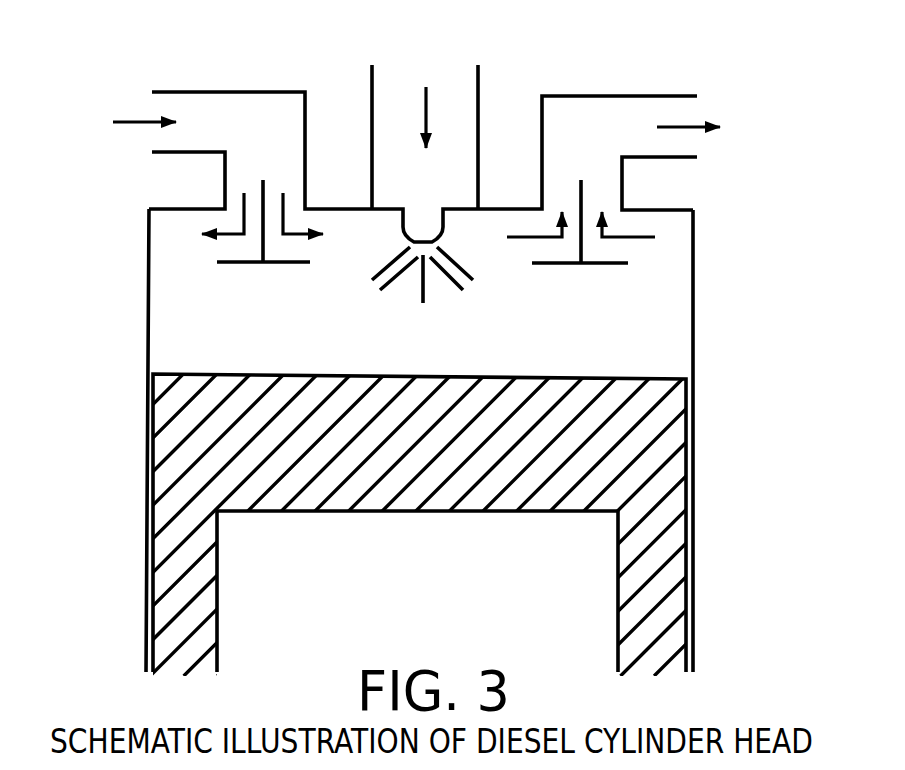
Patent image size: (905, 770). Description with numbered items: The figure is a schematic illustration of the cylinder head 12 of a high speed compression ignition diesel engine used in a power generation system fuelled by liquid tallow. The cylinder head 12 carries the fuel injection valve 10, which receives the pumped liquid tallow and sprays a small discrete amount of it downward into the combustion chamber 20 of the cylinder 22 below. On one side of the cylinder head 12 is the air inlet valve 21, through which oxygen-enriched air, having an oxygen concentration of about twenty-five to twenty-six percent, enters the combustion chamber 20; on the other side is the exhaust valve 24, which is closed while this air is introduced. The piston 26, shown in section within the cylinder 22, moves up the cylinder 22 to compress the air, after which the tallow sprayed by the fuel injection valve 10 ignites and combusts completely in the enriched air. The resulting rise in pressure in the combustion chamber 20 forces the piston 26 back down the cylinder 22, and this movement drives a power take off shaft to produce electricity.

The fuel injection valve 10 is at (418, 69).
The cylinder head 12 is at (504, 204).
The combustion chamber 20 is at (668, 331).
The air inlet valve 21 is at (152, 106).
The cylinder 22 is at (708, 447).
The exhaust valve 24 is at (692, 112).
The piston 26 is at (194, 428).